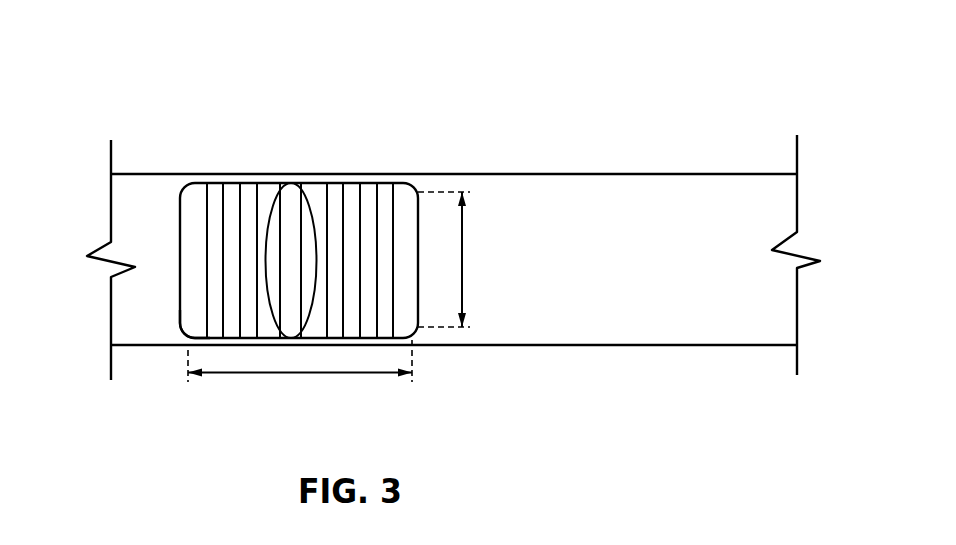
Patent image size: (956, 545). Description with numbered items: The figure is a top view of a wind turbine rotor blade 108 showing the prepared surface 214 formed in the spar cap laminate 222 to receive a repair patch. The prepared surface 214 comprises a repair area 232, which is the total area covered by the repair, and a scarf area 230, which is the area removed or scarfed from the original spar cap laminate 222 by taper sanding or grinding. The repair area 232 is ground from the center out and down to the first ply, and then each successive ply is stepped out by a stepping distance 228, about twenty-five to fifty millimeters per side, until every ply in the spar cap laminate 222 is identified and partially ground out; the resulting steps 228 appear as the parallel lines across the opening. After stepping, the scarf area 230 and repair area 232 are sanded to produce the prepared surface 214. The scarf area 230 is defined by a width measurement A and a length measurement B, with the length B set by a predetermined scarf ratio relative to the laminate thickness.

The wind turbine rotor blade 108 is at (744, 129).
The spar cap laminate 222 is at (660, 270).
The prepared surface 214 is at (198, 162).
The stepping distance 228 is at (331, 193).
The scarf area 230 is at (293, 166).
The repair area 232 is at (188, 334).
The width measurement A is at (463, 258).
The length measurement B is at (300, 373).